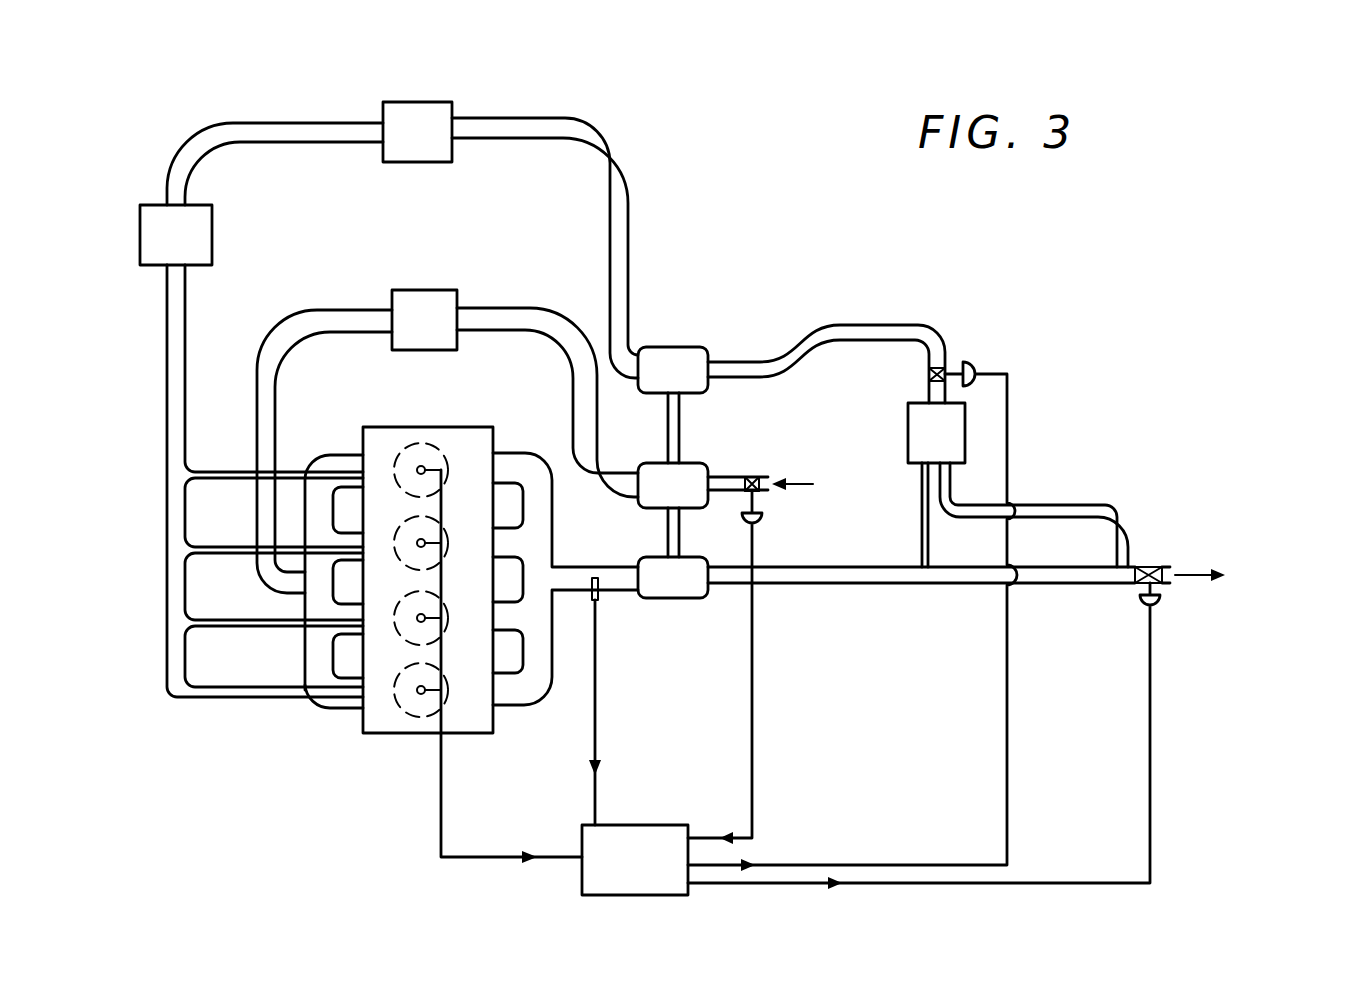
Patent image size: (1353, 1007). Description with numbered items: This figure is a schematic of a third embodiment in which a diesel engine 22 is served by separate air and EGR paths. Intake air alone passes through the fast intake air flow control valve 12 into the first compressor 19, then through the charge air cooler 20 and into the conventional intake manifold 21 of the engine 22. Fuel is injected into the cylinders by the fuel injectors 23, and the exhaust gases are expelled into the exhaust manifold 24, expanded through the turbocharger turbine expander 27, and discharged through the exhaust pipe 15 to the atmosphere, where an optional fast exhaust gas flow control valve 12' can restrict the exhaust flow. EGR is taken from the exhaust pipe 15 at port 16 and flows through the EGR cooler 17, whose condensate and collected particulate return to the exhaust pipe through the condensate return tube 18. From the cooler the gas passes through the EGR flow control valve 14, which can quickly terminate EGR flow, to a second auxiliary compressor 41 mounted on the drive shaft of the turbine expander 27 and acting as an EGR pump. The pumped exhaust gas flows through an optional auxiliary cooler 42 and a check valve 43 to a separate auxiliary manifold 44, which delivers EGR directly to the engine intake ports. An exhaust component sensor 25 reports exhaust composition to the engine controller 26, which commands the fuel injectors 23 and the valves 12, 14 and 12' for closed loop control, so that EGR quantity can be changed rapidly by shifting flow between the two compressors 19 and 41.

The fast intake air flow control valve 12 is at (785, 649).
The fast exhaust gas flow control valve 12' is at (966, 736).
The EGR flow control valve 14 is at (968, 362).
The exhaust pipe 15 is at (1067, 578).
The port 16 is at (1130, 565).
The EGR cooler 17 is at (920, 425).
The condensate return tube 18 is at (920, 542).
The compressor 19 is at (693, 472).
The charge air cooler 20 is at (420, 300).
The intake manifold 21 is at (337, 465).
The engine 22 is at (415, 735).
The fuel injectors 23 is at (418, 466).
The exhaust manifold 24 is at (543, 462).
The exhaust component sensor 25 is at (600, 597).
The engine controller 26 is at (625, 833).
The turbocharger turbine expander 27 is at (675, 596).
The auxiliary compressor 41 is at (692, 353).
The auxiliary cooler 42 is at (418, 113).
The check valve 43 is at (207, 230).
The auxiliary manifold 44 is at (183, 622).